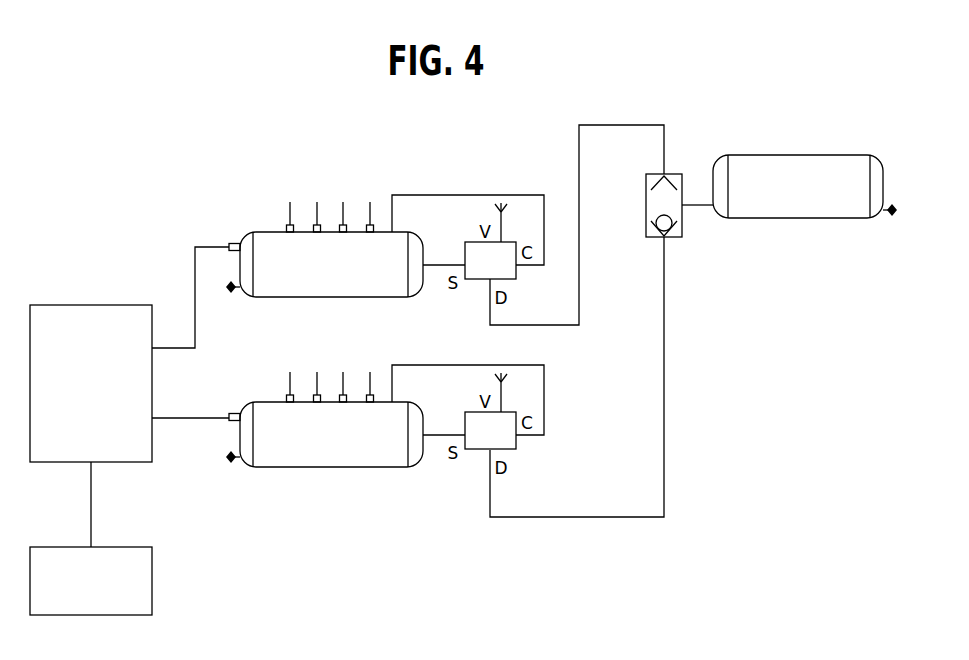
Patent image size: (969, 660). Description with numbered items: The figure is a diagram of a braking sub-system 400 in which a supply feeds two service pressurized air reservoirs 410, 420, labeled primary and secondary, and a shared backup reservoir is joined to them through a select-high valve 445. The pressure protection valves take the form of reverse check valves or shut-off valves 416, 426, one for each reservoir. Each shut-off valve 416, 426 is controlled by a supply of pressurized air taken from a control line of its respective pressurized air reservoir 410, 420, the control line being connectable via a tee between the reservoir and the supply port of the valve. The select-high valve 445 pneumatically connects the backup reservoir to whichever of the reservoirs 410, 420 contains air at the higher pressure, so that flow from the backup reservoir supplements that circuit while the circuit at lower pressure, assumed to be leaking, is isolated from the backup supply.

The braking sub-system 400 is at (741, 114).
The pressurized air reservoir 410 is at (278, 231).
The shut-off valve 416 is at (513, 282).
The pressurized air reservoir 420 is at (385, 468).
The shut-off valve 426 is at (513, 452).
The select-high valve 445 is at (677, 238).